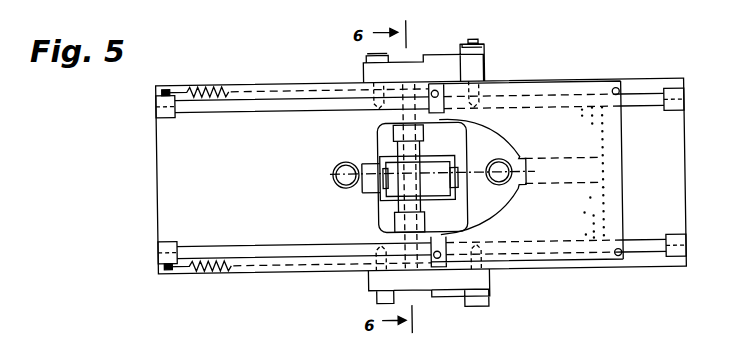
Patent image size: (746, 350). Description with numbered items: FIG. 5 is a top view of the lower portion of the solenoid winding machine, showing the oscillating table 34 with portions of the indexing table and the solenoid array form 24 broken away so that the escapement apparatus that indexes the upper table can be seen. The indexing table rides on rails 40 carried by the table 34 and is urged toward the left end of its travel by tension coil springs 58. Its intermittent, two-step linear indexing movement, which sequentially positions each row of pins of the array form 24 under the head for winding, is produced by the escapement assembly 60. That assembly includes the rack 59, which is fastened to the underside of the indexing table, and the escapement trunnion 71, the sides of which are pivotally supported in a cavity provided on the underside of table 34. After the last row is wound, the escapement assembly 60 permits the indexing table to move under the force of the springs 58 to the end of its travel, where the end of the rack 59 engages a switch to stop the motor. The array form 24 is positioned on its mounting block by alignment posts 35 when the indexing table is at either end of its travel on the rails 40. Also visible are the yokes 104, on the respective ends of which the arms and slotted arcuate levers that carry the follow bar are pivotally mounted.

The solenoid array form 24 is at (526, 174).
The oscillating table 34 is at (241, 177).
The alignment posts 35 is at (435, 90).
The rails 40 is at (238, 112).
The tension coil springs 58 is at (210, 86).
The rack 59 is at (374, 194).
The escapement assembly 60 is at (386, 222).
The escapement trunnion 71 is at (426, 133).
The yokes 104 is at (447, 62).